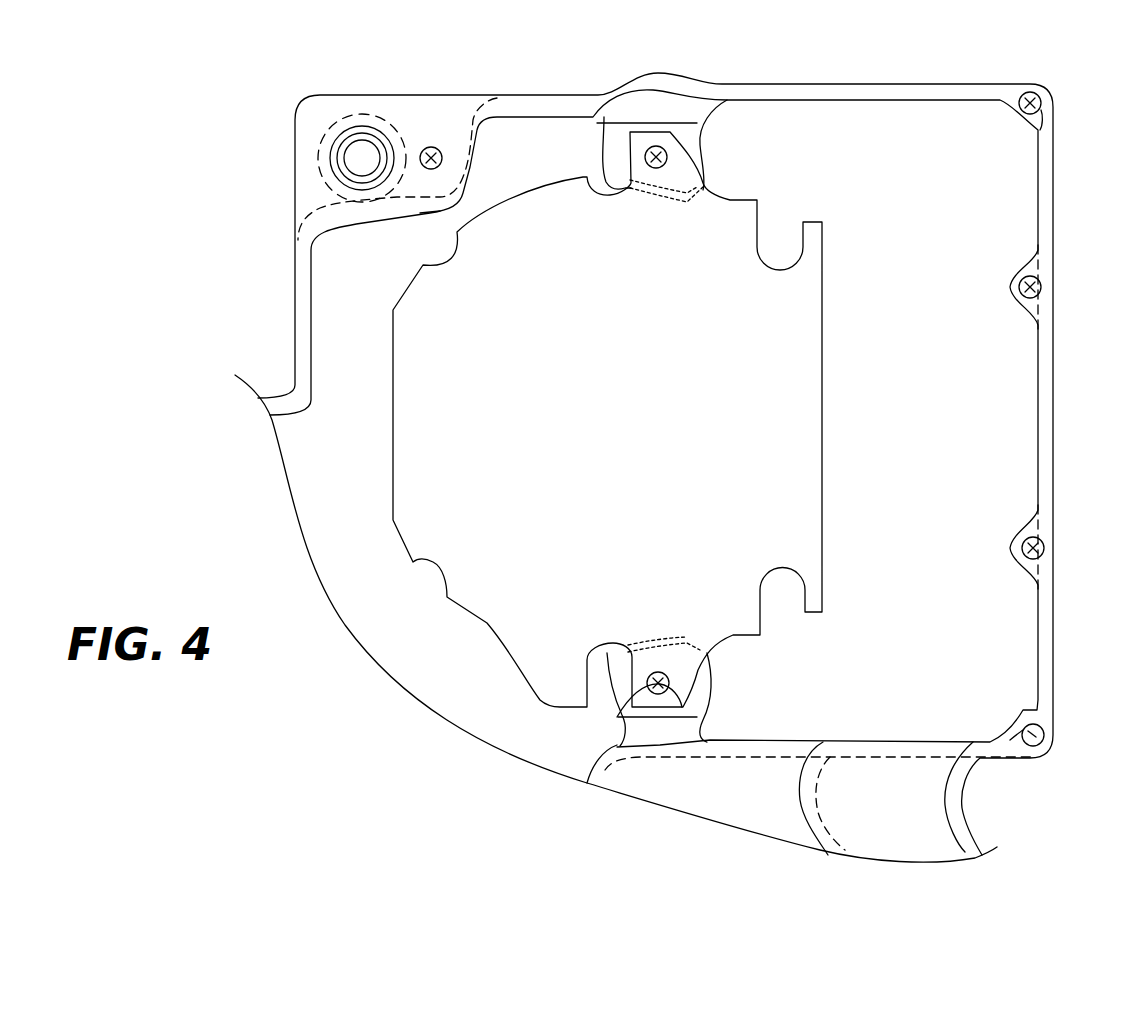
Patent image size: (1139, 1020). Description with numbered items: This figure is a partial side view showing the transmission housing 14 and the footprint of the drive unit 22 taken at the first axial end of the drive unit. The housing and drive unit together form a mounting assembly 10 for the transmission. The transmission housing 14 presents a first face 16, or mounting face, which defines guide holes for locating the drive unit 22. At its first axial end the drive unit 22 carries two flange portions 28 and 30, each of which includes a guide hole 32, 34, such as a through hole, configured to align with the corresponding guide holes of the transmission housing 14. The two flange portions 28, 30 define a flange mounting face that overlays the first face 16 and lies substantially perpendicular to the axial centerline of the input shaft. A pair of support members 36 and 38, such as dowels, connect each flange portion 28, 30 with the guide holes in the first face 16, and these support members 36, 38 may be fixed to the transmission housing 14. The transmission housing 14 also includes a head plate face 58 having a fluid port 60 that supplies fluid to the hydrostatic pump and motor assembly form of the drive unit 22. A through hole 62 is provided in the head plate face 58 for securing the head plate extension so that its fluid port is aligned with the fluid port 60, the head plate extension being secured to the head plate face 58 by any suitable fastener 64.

The mounting assembly 10 is at (706, 76).
The transmission housing 14 is at (1053, 185).
The first face 16 is at (857, 191).
The drive unit 22 is at (840, 412).
The flange portion 28 is at (703, 155).
The flange portion 30 is at (697, 683).
The guide hole 32 is at (660, 146).
The guide hole 34 is at (697, 711).
The support member 36 is at (653, 149).
The support member 38 is at (617, 713).
The head plate face 58 is at (430, 113).
The fluid port 60 is at (344, 150).
The through hole 62 is at (423, 152).
The fastener 64 is at (443, 153).